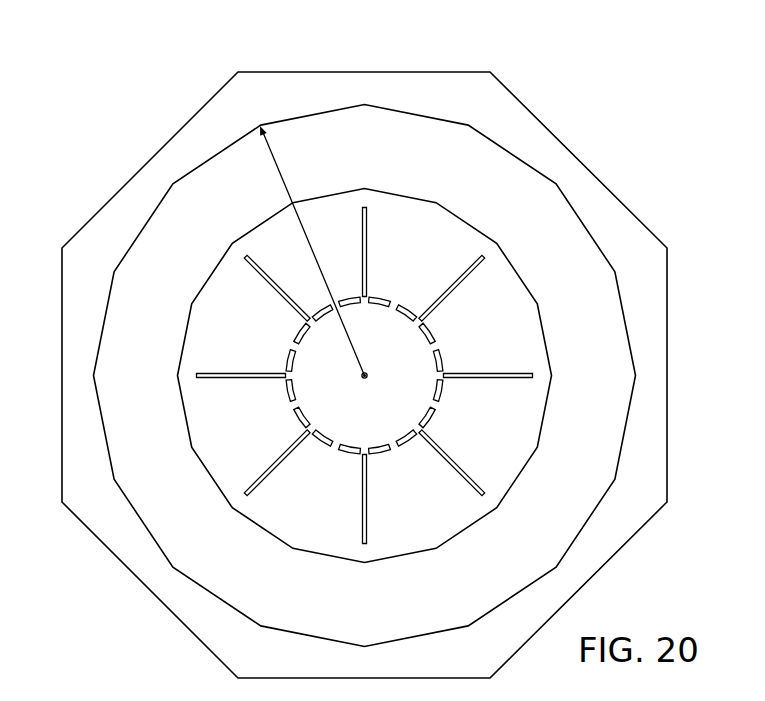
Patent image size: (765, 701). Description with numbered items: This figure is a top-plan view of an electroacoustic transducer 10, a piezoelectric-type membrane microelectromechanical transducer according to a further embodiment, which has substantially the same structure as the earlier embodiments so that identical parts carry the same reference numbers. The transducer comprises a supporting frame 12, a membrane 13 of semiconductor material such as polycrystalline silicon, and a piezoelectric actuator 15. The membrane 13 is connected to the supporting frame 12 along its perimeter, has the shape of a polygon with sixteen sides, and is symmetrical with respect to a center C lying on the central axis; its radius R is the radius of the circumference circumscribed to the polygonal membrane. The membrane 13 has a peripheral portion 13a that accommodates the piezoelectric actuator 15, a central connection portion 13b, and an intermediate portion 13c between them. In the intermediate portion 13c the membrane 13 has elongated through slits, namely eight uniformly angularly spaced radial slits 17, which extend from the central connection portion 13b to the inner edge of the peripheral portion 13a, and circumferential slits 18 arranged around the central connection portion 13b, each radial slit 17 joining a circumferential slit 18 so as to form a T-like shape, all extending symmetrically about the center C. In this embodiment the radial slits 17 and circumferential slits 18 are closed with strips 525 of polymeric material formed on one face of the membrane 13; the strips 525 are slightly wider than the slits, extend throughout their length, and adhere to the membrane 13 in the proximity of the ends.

The electroacoustic transducer 10 is at (119, 133).
The supporting frame 12 is at (300, 78).
The membrane 13 is at (500, 125).
The peripheral portion 13a is at (556, 248).
The central connection portion 13b is at (413, 408).
The intermediate portion 13c is at (515, 427).
The piezoelectric actuator 15 is at (174, 522).
The radial slits 17 is at (368, 230).
The circumferential slits 18 is at (382, 310).
The strips 525 is at (364, 208).
The radius R is at (286, 190).
The center C is at (358, 374).